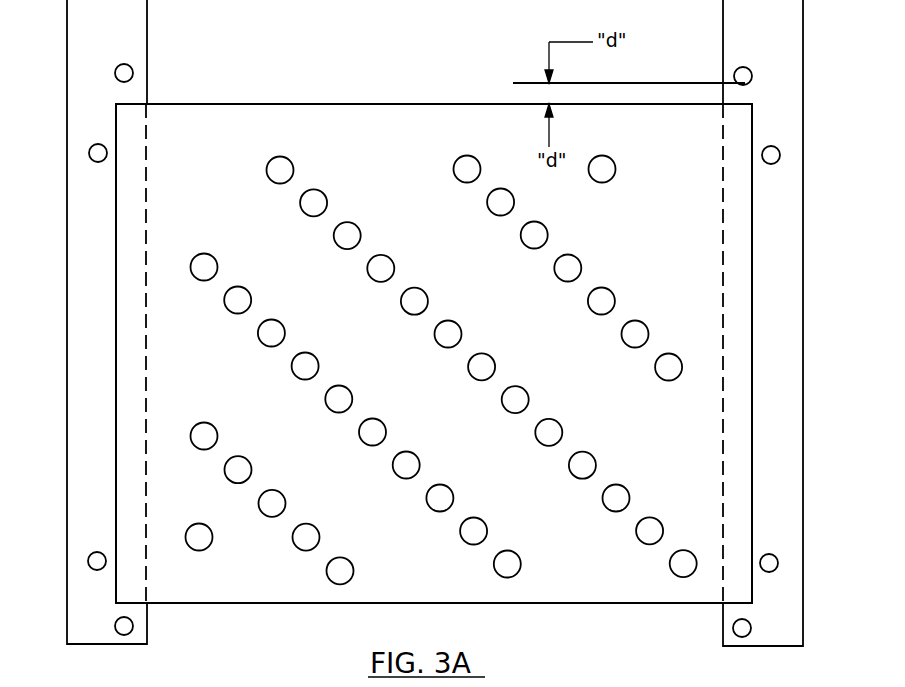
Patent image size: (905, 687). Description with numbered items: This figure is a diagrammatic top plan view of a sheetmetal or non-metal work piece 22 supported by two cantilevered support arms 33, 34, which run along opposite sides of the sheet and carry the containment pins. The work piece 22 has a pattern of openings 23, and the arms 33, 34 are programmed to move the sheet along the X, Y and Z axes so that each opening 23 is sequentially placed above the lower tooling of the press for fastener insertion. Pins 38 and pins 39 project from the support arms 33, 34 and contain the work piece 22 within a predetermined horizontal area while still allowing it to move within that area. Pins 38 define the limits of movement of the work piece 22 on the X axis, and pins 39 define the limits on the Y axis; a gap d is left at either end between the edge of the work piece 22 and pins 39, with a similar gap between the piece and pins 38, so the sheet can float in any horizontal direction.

The work piece 22 is at (387, 568).
The openings 23 is at (315, 202).
The cantilevered support arm 33 is at (93, 298).
The cantilevered support arm 34 is at (778, 445).
The pins 38 is at (90, 158).
The pins 39 is at (131, 65).